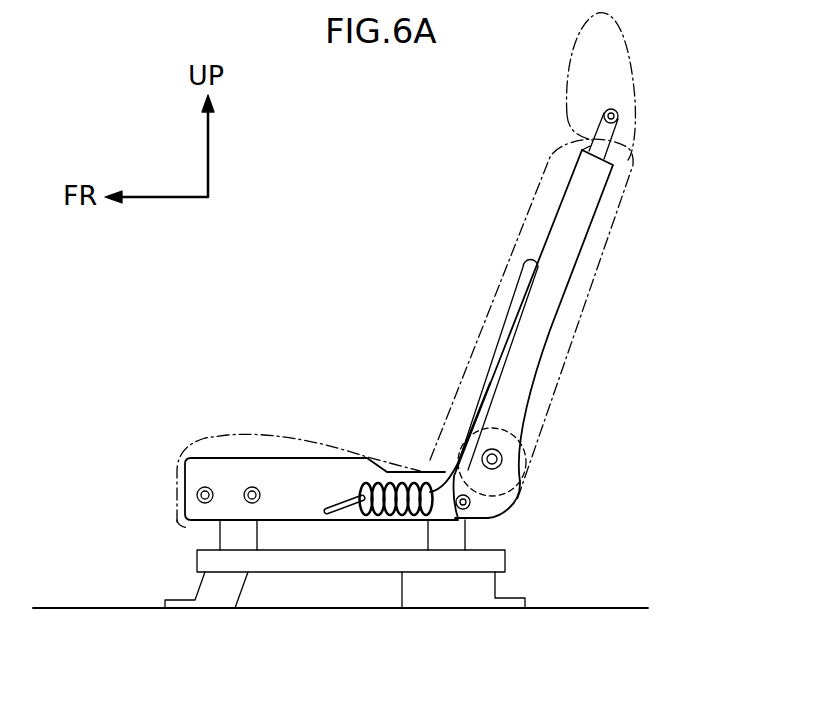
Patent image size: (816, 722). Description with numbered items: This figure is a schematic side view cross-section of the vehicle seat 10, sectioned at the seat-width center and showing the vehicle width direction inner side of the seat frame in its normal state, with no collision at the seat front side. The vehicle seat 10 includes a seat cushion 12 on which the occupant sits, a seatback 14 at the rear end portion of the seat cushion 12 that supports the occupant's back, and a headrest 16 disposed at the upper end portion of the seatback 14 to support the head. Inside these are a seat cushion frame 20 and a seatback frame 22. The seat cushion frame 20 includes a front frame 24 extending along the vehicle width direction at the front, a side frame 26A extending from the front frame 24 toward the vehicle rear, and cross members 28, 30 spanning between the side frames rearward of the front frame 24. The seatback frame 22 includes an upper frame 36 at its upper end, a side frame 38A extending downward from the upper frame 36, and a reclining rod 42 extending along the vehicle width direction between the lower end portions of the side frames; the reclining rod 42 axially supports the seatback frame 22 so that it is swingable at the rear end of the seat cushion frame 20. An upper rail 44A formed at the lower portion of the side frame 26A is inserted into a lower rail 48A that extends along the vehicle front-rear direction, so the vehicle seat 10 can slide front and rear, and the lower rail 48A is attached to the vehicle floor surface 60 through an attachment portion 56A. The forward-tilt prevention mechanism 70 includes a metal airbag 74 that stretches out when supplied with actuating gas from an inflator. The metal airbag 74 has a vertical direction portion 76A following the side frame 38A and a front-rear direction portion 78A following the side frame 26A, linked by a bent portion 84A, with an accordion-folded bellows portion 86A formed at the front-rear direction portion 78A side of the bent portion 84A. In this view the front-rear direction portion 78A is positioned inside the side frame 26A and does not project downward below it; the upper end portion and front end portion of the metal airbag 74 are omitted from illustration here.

The vehicle seat 10 is at (402, 205).
The seat cushion 12 is at (302, 442).
The seatback 14 is at (606, 240).
The headrest 16 is at (625, 60).
The seat cushion frame 20 is at (186, 471).
The seatback frame 22 is at (540, 217).
The front frame 24 is at (202, 487).
The side frame 26A is at (267, 468).
The cross member 28 is at (247, 487).
The cross member 30 is at (470, 503).
The upper frame 36 is at (622, 110).
The side frame 38A is at (543, 302).
The reclining rod 42 is at (503, 457).
The upper rail 44A is at (232, 535).
The lower rail 48A is at (308, 562).
The attachment portion 56A is at (213, 598).
The vehicle floor surface 60 is at (58, 607).
The forward-tilt prevention mechanism 70 is at (512, 357).
The metal airbag 74 is at (484, 383).
The vertical direction portion 76A is at (510, 312).
The front-rear direction portion 78A is at (337, 507).
The bent portion 84A is at (445, 483).
The bellows portion 86A is at (398, 470).